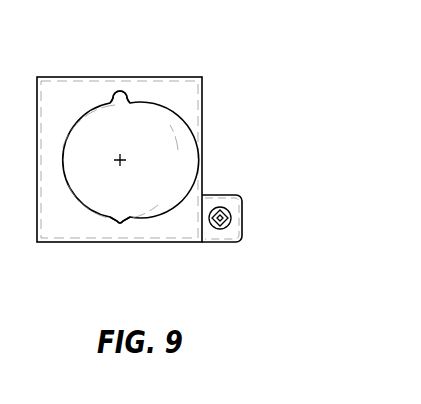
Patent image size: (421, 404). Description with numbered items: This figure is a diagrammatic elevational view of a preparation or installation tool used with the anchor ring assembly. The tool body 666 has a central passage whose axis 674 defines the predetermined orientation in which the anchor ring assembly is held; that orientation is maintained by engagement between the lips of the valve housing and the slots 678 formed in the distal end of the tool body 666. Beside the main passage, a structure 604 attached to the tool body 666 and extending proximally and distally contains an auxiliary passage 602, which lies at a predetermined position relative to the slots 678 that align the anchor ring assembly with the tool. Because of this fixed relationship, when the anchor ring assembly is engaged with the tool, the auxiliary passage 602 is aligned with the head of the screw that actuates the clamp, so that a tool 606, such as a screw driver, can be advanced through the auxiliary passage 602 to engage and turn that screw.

The tool body 666 is at (205, 108).
The axis 674 is at (116, 154).
The slots 678 is at (120, 91).
The structure 604 is at (216, 193).
The tool 606 is at (231, 216).
The auxiliary passage 602 is at (221, 229).